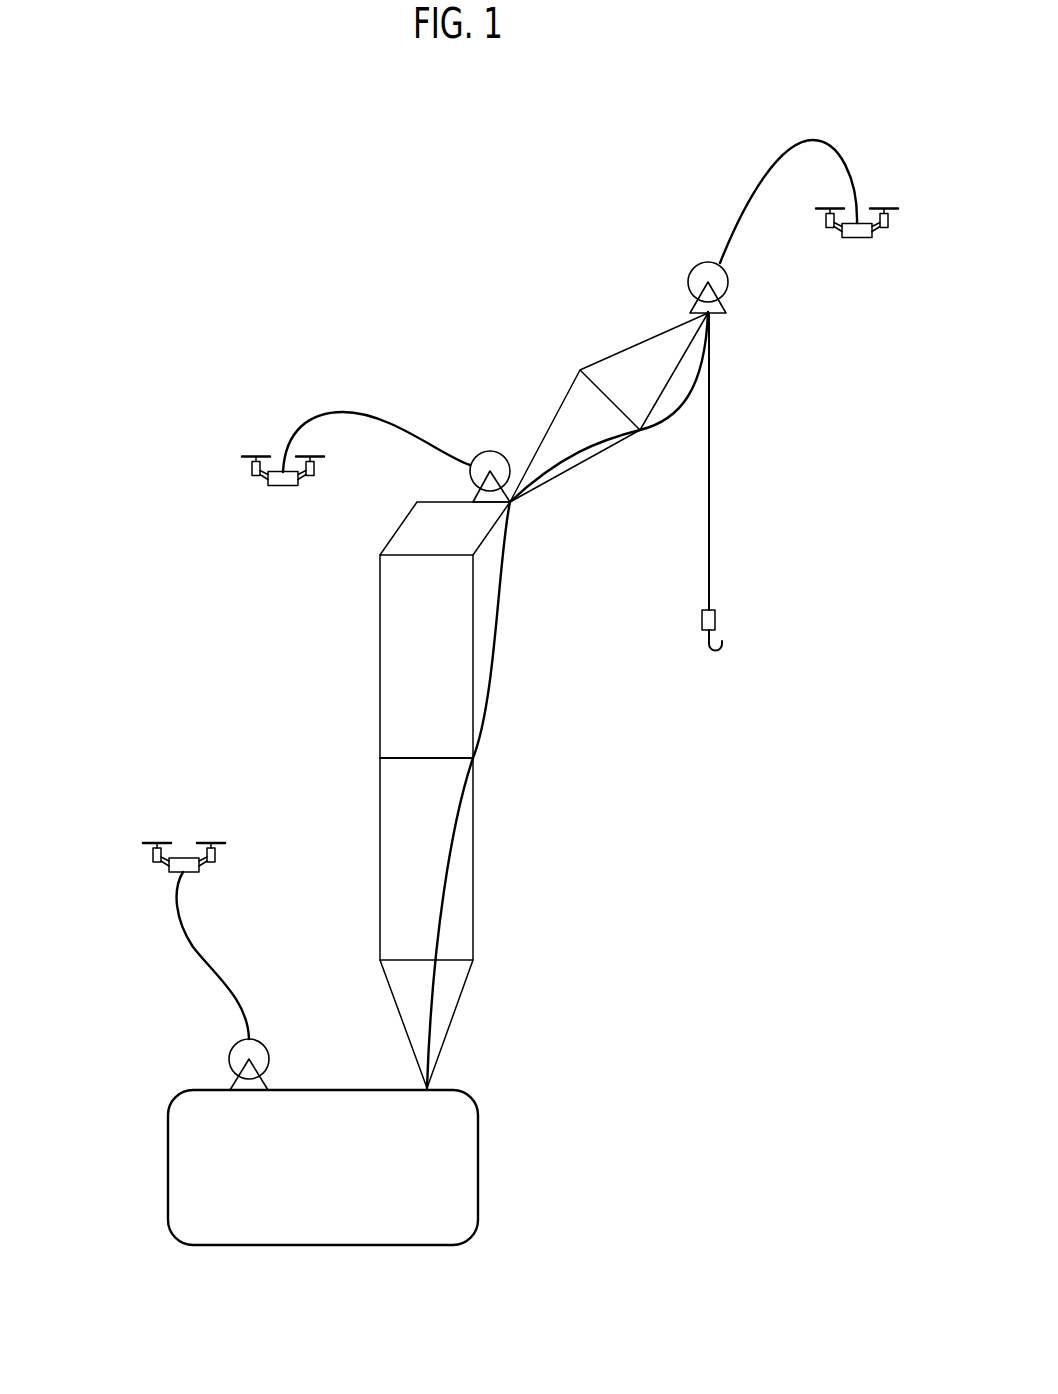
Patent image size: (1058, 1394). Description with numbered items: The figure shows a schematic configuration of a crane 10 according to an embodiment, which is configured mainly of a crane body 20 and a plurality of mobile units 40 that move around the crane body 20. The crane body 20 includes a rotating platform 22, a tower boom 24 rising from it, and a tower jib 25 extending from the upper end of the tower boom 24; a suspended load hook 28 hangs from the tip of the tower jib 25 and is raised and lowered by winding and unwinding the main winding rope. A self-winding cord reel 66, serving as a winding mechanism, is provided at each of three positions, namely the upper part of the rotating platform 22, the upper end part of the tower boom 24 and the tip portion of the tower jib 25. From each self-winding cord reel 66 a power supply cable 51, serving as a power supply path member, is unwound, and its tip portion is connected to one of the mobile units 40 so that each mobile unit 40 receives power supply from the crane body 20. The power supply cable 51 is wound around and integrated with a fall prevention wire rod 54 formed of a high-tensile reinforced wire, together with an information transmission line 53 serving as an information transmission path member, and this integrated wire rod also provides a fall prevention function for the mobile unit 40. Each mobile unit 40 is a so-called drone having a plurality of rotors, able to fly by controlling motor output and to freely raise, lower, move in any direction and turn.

The crane 10 is at (260, 240).
The crane body 20 is at (568, 825).
The rotating platform 22 is at (168, 1147).
The tower boom 24 is at (379, 652).
The tower jib 25 is at (622, 337).
The suspended load hook 28 is at (715, 618).
The mobile unit 40 is at (862, 238).
The power supply cable 51 is at (452, 614).
The information transmission line 53 is at (452, 614).
The fall prevention wire rod 54 is at (748, 192).
The self-winding cord reel 66 is at (692, 268).